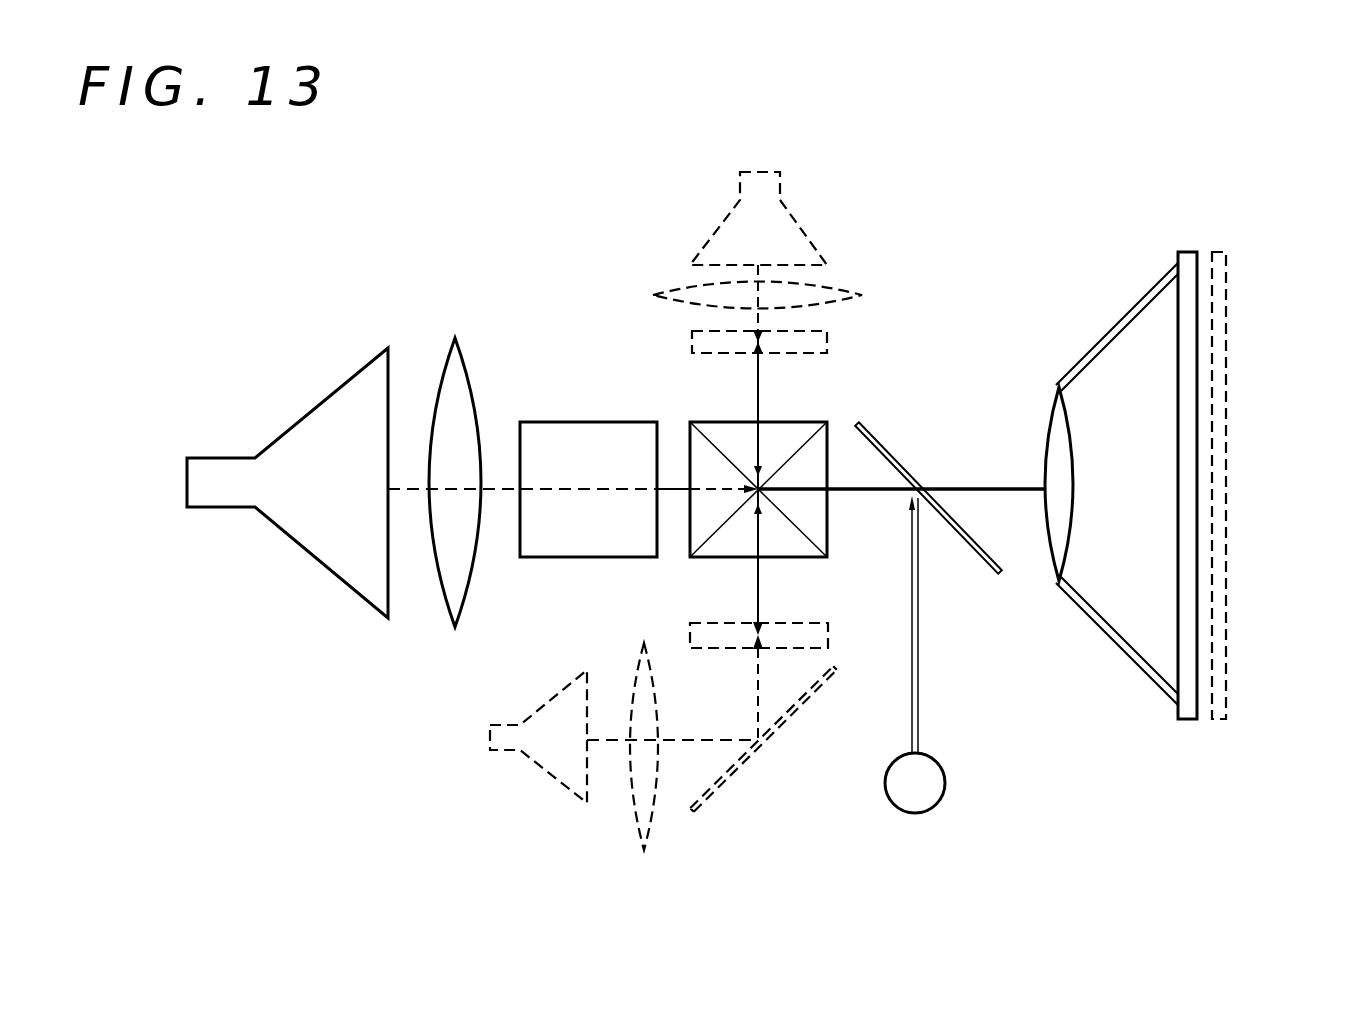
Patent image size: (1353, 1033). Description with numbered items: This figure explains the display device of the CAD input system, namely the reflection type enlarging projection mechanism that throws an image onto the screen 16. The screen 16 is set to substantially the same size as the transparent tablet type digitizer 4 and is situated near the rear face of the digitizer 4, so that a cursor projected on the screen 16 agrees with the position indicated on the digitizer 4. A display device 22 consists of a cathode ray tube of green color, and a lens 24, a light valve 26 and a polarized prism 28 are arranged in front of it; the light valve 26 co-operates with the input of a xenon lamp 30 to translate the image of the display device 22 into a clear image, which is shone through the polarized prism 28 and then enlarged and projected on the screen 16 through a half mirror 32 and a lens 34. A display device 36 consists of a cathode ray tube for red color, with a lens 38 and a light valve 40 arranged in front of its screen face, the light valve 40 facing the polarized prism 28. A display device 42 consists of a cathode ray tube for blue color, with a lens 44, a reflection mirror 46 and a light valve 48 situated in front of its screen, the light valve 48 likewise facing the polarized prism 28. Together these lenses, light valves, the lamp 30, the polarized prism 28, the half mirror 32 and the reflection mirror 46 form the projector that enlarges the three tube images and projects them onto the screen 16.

The transparent tablet type digitizer 4 is at (1218, 657).
The screen 16 is at (1185, 538).
The display device 22 is at (350, 390).
The lens 24 is at (448, 365).
The light valve 26 is at (562, 432).
The polarized prism 28 is at (712, 428).
The xenon lamp 30 is at (940, 778).
The half mirror 32 is at (881, 442).
The lens 34 is at (1067, 451).
The display device 36 is at (803, 243).
The lens 38 is at (835, 290).
The light valve 40 is at (818, 343).
The display device 42 is at (533, 722).
The lens 44 is at (637, 683).
The reflection mirror 46 is at (797, 712).
The light valve 48 is at (803, 627).